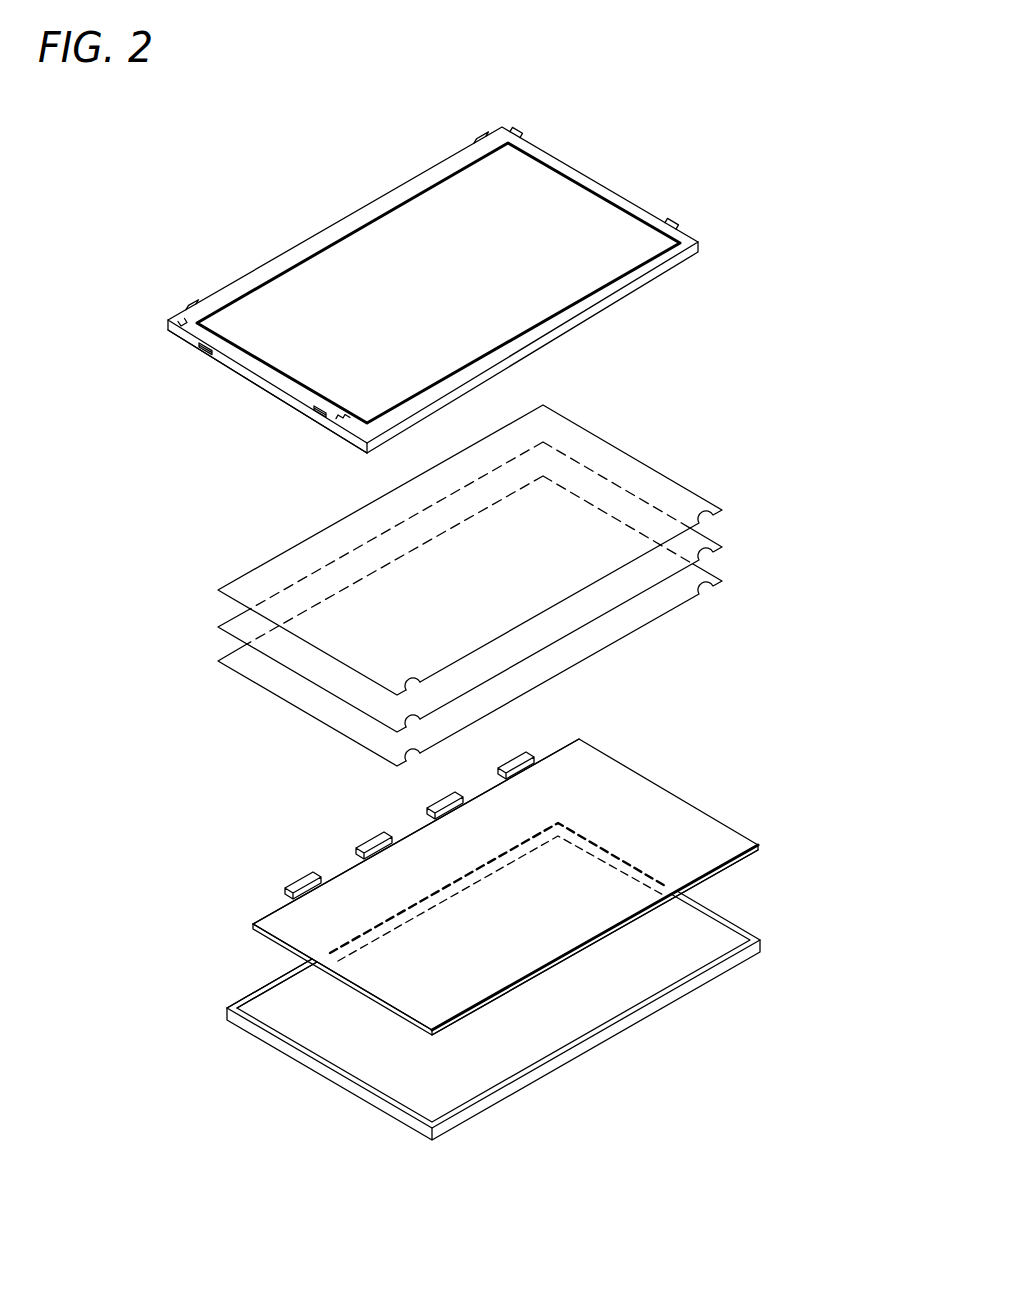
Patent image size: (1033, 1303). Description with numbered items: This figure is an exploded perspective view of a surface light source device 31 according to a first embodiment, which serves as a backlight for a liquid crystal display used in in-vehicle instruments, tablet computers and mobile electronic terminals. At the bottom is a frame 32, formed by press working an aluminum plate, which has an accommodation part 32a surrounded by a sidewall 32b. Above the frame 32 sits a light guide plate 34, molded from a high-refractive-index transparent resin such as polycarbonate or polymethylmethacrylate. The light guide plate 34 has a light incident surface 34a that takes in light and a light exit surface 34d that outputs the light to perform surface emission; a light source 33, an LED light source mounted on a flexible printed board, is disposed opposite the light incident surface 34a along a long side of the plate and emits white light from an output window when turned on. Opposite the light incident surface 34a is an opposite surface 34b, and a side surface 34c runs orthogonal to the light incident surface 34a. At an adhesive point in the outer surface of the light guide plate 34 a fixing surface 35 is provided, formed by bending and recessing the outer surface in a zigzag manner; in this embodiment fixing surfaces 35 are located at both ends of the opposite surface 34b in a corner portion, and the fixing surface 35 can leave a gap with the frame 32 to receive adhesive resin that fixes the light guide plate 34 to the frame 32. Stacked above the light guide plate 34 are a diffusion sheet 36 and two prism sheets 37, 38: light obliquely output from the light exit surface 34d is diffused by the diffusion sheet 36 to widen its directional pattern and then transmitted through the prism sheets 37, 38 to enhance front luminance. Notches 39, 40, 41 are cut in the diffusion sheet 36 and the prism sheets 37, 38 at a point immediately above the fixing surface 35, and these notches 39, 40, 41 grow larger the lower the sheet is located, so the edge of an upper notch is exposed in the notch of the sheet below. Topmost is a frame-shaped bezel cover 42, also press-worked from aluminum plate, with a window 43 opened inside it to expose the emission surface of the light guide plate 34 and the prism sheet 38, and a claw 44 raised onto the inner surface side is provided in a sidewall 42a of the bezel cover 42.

The surface light source device 31 is at (697, 131).
The frame 32 is at (648, 1013).
The accommodation part 32a is at (348, 1028).
The sidewall 32b is at (266, 988).
The light source 33 is at (373, 838).
The light guide plate 34 is at (630, 820).
The light incident surface 34a is at (346, 870).
The opposite surface 34b is at (540, 980).
The side surface 34c is at (397, 1011).
The light exit surface 34d is at (555, 868).
The fixing surface 35 is at (435, 1030).
The diffusion sheet 36 is at (325, 707).
The prism sheet 37 is at (280, 653).
The prism sheet 38 is at (318, 555).
The notch 39 is at (416, 753).
The notch 40 is at (425, 712).
The notch 41 is at (418, 678).
The bezel cover 42 is at (620, 289).
The sidewall 42a is at (272, 388).
The window 43 is at (392, 253).
The claw 44 is at (203, 351).